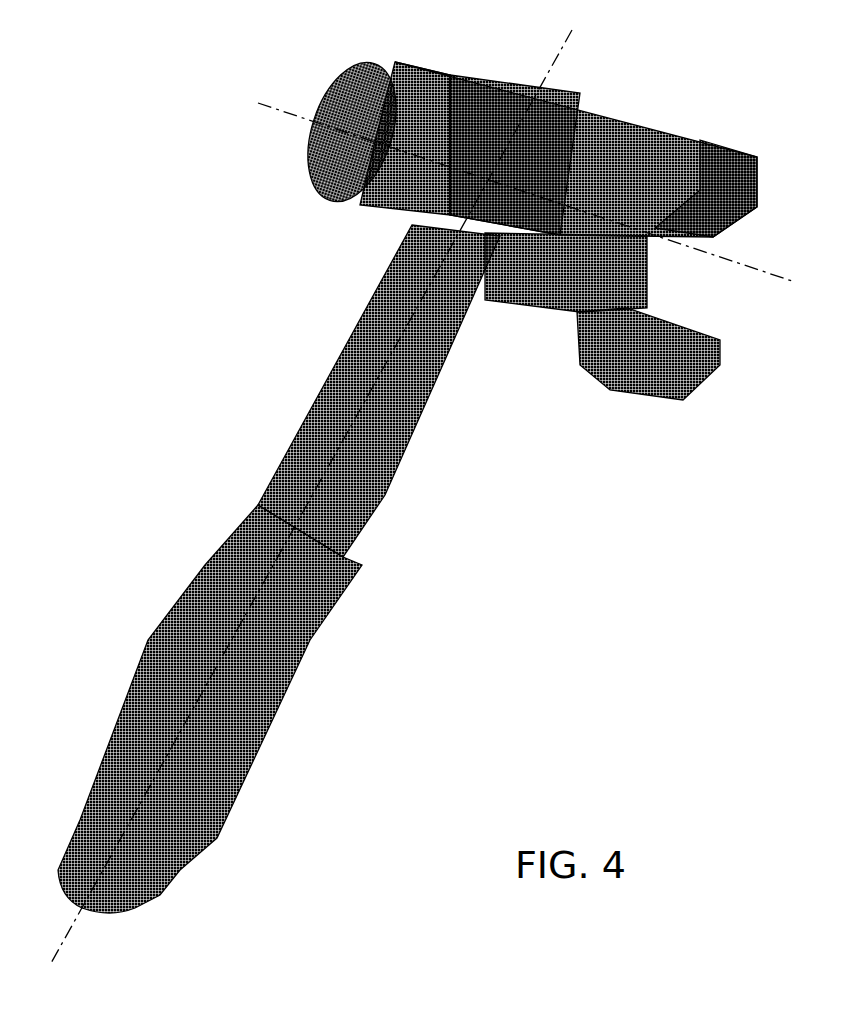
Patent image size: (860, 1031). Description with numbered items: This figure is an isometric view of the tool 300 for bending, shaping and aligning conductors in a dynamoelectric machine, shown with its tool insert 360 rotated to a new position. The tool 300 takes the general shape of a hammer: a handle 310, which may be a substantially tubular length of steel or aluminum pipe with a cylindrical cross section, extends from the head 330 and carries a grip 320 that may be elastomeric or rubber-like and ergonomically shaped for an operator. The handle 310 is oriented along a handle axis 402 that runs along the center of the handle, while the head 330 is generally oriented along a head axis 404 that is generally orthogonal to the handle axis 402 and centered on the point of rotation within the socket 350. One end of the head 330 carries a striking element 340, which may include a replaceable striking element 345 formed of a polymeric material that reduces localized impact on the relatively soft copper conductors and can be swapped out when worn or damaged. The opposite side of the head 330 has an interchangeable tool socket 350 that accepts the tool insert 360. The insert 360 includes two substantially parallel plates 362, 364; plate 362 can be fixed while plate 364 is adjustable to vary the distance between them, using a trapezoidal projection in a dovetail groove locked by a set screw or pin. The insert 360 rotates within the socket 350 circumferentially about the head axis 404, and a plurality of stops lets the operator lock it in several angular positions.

The tool 300 is at (128, 214).
The handle 310 is at (372, 468).
The grip 320 is at (275, 700).
The head 330 is at (515, 155).
The striking element 340 is at (372, 207).
The replaceable striking element 345 is at (350, 78).
The interchangeable tool socket 350 is at (562, 135).
The tool insert 360 is at (570, 305).
The plate 362 is at (702, 178).
The plate 364 is at (643, 380).
The handle axis 402 is at (66, 930).
The head axis 404 is at (748, 268).